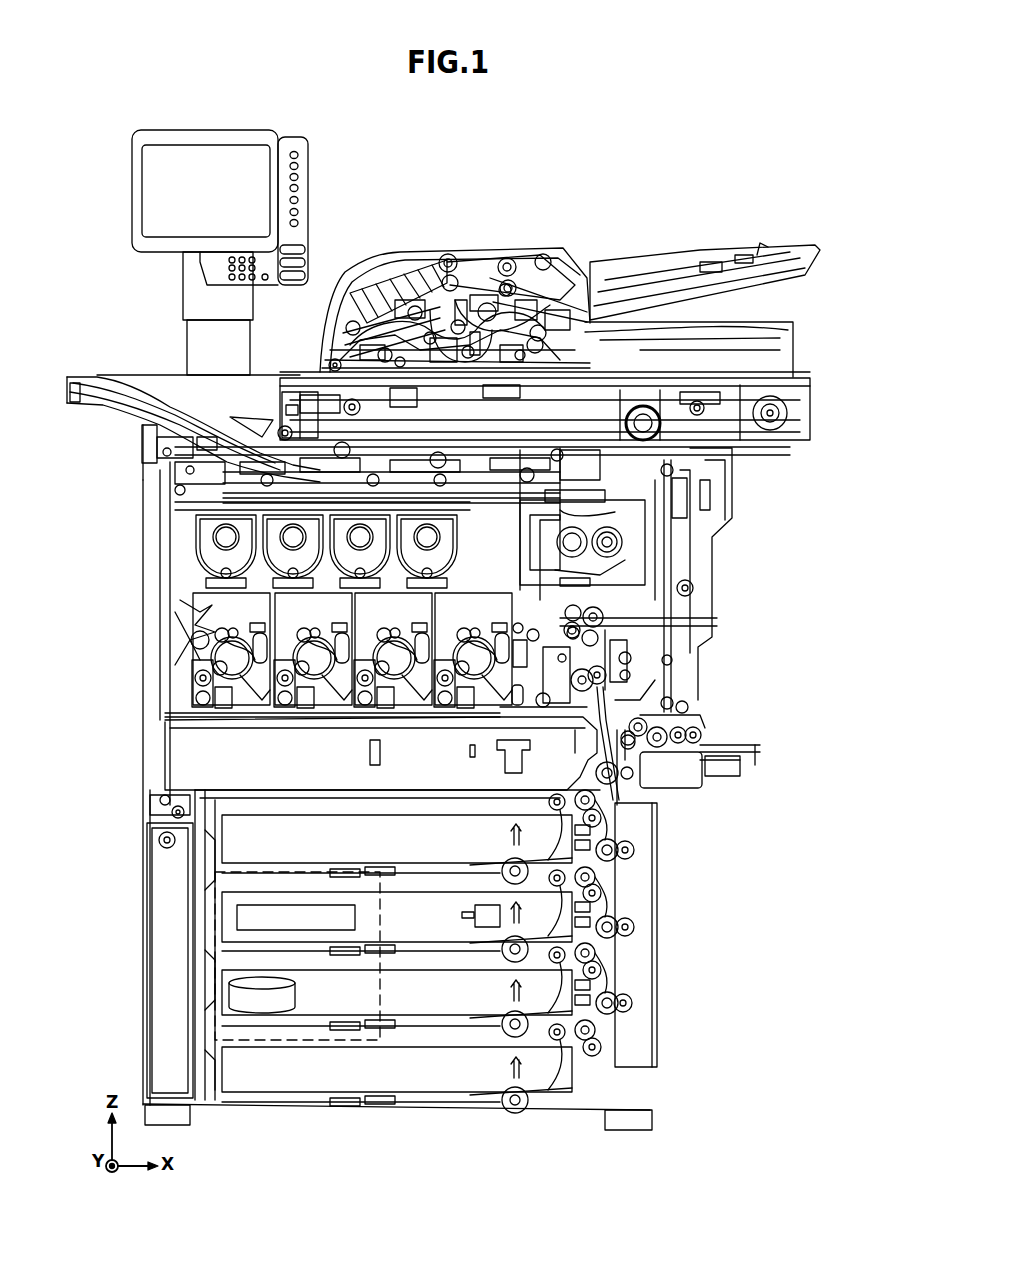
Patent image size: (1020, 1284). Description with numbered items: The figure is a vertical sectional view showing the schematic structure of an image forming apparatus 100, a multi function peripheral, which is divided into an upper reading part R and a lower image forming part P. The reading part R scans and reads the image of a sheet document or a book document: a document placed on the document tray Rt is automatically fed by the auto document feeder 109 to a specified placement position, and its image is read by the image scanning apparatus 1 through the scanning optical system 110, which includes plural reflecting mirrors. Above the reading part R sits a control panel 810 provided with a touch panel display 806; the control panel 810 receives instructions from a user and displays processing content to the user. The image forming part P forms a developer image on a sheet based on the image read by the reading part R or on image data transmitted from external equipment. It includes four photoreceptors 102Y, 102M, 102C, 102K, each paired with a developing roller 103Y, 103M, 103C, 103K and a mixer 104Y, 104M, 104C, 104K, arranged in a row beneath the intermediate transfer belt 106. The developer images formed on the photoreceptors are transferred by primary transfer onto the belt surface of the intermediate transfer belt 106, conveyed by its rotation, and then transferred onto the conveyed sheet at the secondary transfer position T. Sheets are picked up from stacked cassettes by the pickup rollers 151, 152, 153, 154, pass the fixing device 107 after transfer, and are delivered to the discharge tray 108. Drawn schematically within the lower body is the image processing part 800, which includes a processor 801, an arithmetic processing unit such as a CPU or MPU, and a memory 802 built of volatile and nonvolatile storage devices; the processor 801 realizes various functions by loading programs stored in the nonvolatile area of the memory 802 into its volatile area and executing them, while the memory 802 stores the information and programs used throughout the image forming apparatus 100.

The image forming apparatus 100 is at (885, 128).
The control panel 810 is at (282, 130).
The touch panel display 806 is at (152, 205).
The auto document feeder 109 is at (338, 272).
The discharge tray 108 is at (150, 377).
The scanning optical system 110 is at (322, 323).
The image scanning apparatus 1 is at (653, 378).
The document tray Rt is at (702, 262).
The reading part R is at (828, 247).
The image forming part P is at (828, 449).
The intermediate transfer belt 106 is at (480, 576).
The fixing device 107 is at (633, 557).
The secondary transfer position T is at (567, 627).
The photoreceptor 102Y is at (210, 608).
The photoreceptor 102M is at (312, 632).
The photoreceptor 102C is at (392, 632).
The photoreceptor 102K is at (446, 632).
The developing roller 103Y is at (200, 672).
The developing roller 103M is at (288, 712).
The developing roller 103C is at (368, 712).
The developing roller 103K is at (443, 712).
The mixer 104Y is at (210, 705).
The mixer 104M is at (277, 712).
The mixer 104C is at (353, 712).
The mixer 104K is at (432, 712).
The pickup roller 151 is at (428, 823).
The pickup roller 152 is at (428, 914).
The pickup roller 153 is at (427, 990).
The pickup roller 154 is at (411, 1066).
The image processing part 800 is at (412, 1062).
The processor 801 is at (357, 917).
The memory 802 is at (264, 1013).